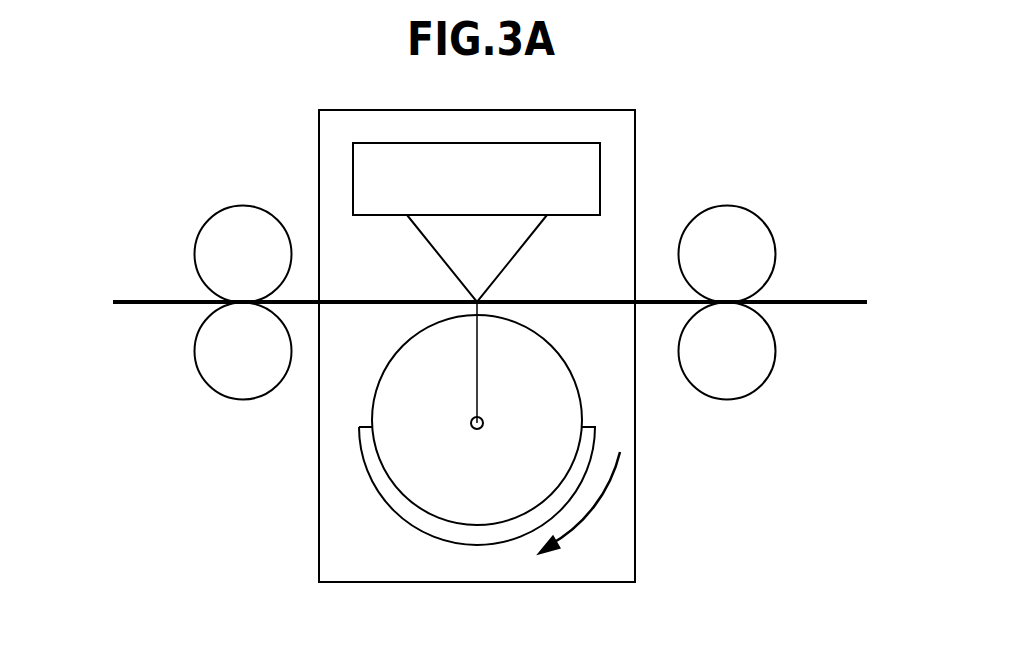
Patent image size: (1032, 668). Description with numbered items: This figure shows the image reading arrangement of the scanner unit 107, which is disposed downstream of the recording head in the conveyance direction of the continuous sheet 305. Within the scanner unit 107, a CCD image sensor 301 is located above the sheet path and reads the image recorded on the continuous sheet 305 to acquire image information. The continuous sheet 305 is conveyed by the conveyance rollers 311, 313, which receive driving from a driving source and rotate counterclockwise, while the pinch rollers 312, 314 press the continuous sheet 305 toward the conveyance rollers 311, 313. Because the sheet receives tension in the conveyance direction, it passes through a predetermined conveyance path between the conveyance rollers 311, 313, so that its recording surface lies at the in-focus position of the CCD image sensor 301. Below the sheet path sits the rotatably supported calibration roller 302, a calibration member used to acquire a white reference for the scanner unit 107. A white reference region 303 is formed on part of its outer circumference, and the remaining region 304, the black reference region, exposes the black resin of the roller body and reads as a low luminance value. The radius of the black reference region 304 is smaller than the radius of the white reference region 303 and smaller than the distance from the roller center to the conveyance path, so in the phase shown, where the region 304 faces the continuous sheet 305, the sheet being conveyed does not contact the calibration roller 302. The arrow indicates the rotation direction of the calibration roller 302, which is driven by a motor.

The scanner unit 107 is at (597, 582).
The CCD image sensor 301 is at (580, 210).
The calibration roller 302 is at (407, 465).
The white reference region 303 is at (430, 523).
The black reference region 304 is at (540, 352).
The continuous sheet 305 is at (350, 305).
The conveyance roller 311 is at (725, 392).
The pinch roller 312 is at (735, 213).
The conveyance roller 313 is at (234, 392).
The pinch roller 314 is at (243, 213).